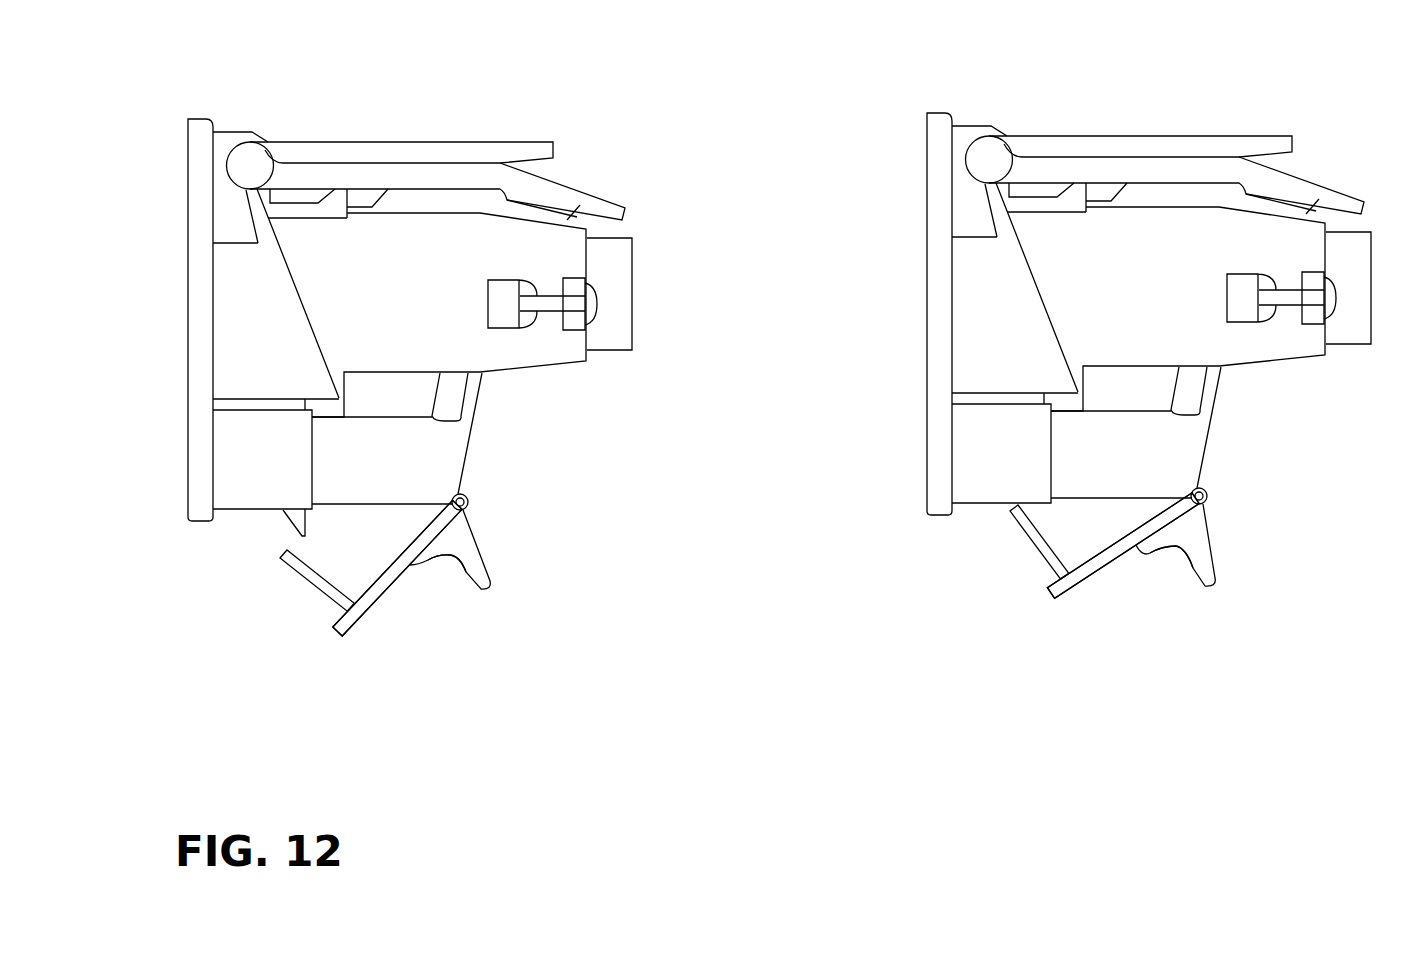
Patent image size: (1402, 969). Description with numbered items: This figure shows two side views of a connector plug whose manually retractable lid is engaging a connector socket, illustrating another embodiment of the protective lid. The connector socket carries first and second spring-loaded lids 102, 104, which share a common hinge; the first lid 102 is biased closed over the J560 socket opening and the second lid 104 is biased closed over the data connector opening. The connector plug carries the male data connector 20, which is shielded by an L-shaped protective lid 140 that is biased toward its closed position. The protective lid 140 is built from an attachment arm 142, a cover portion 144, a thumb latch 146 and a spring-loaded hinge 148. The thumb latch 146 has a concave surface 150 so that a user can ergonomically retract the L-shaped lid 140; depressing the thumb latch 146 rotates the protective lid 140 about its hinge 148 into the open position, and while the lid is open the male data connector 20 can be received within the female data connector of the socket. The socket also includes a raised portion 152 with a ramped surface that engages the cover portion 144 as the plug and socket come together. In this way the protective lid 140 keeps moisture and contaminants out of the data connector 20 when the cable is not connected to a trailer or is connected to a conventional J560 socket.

The male data connector 20 is at (478, 434).
The first lid 102 is at (318, 140).
The second lid 104 is at (422, 163).
The protective lid 140 is at (368, 617).
The attachment arm 142 is at (380, 576).
The cover portion 144 is at (298, 577).
The thumb latch 146 is at (491, 591).
The spring-loaded hinge 148 is at (468, 499).
The concave surface 150 is at (422, 574).
The raised portion 152 is at (290, 518).